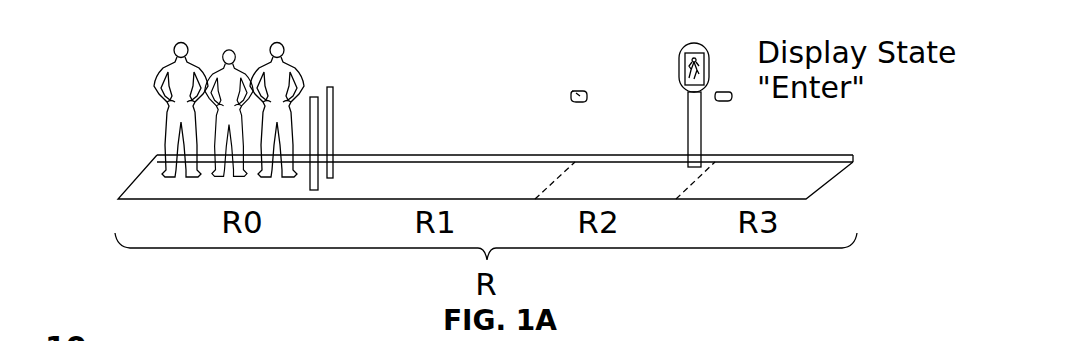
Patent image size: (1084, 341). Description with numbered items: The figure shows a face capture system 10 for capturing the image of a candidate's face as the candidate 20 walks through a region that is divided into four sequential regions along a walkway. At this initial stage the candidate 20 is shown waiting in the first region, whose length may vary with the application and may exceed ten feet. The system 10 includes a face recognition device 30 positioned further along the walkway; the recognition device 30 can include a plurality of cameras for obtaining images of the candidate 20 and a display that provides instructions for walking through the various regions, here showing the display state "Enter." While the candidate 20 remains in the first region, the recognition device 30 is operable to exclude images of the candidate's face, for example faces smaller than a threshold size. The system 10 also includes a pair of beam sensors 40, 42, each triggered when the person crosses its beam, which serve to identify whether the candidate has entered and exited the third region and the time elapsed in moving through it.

The face capture system 10 is at (130, 43).
The candidate 20 is at (276, 42).
The face recognition device 30 is at (693, 42).
The beam sensor 40 is at (583, 90).
The beam sensor 42 is at (724, 103).